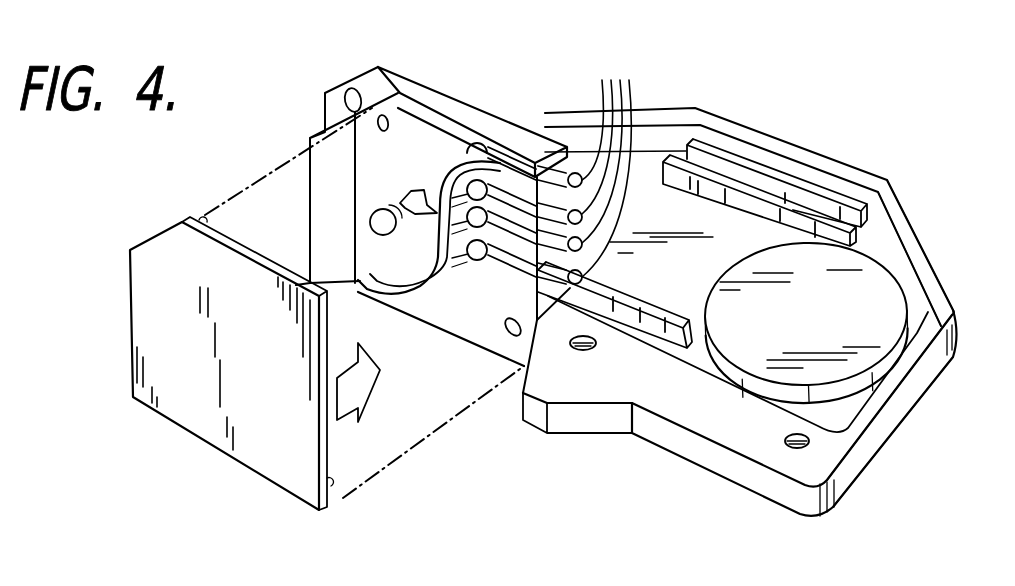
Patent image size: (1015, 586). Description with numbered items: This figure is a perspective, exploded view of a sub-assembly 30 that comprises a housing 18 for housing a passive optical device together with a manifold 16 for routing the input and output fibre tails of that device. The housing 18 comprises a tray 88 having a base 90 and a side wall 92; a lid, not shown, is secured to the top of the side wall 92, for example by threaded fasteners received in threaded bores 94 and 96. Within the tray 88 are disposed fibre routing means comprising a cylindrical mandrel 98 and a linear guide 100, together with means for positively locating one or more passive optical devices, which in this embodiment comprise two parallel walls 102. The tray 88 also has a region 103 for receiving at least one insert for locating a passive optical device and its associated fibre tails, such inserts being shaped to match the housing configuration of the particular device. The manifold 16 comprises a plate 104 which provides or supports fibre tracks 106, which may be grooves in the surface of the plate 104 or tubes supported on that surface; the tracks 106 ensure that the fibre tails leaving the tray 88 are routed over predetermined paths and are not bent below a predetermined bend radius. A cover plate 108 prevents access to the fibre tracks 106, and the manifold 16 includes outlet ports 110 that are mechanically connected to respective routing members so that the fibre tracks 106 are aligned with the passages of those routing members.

The manifold 16 is at (402, 460).
The housing 18 is at (925, 215).
The sub-assembly 30 is at (338, 68).
The tray 88 is at (862, 472).
The base 90 is at (663, 282).
The side wall 92 is at (903, 403).
The threaded bore 94 is at (580, 357).
The threaded bore 96 is at (713, 500).
The cylindrical mandrel 98 is at (790, 339).
The linear guide 100 is at (665, 332).
The parallel walls 102 is at (776, 214).
The region 103 is at (722, 242).
The plate 104 is at (480, 122).
The fibre tracks 106 is at (438, 173).
The cover plate 108 is at (208, 418).
The outlet ports 110 is at (614, 162).